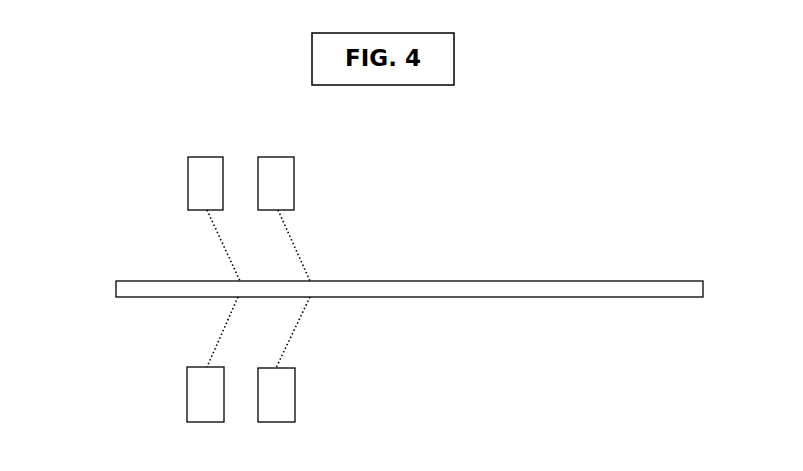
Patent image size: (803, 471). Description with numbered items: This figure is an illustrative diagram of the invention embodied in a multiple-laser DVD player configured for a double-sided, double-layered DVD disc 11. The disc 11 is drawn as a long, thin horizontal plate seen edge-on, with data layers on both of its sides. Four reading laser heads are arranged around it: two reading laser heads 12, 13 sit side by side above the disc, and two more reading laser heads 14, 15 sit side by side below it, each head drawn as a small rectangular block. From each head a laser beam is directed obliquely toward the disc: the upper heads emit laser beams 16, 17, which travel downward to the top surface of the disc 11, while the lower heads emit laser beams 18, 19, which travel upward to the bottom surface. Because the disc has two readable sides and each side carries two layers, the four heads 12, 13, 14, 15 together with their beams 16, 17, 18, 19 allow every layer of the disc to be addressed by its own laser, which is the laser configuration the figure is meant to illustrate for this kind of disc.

The double-sided, double-layered DVD disc 11 is at (577, 281).
The reading laser head 12 is at (188, 191).
The reading laser head 13 is at (294, 173).
The reading laser head 14 is at (187, 403).
The reading laser head 15 is at (295, 397).
The laser beam 16 is at (222, 245).
The laser beam 17 is at (303, 257).
The laser beam 18 is at (213, 348).
The laser beam 19 is at (295, 333).